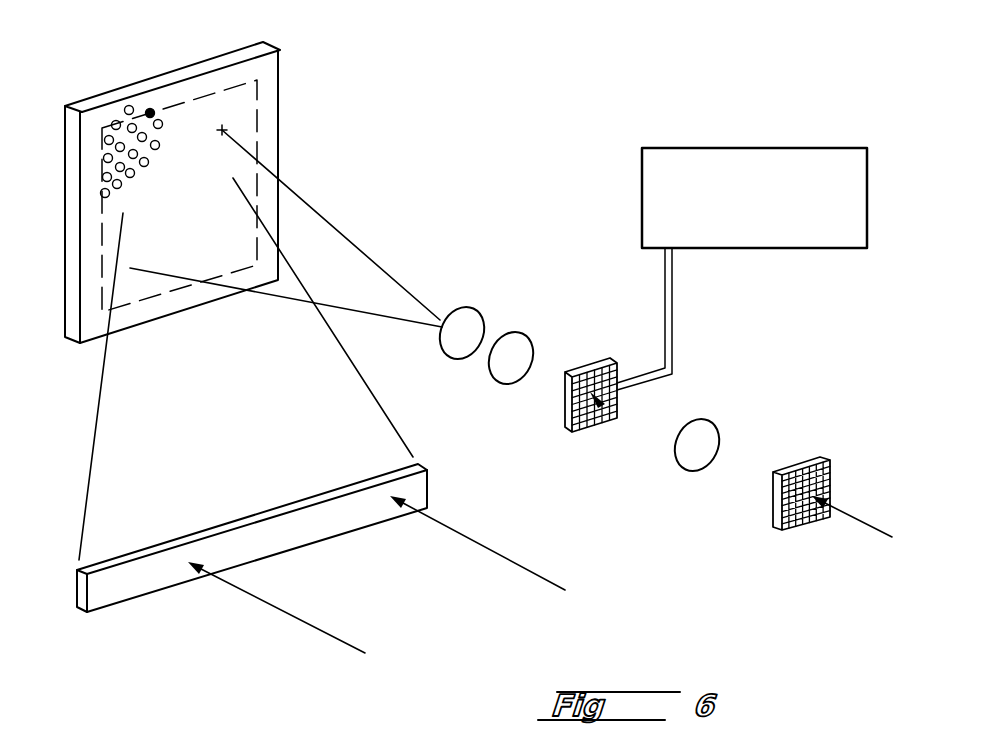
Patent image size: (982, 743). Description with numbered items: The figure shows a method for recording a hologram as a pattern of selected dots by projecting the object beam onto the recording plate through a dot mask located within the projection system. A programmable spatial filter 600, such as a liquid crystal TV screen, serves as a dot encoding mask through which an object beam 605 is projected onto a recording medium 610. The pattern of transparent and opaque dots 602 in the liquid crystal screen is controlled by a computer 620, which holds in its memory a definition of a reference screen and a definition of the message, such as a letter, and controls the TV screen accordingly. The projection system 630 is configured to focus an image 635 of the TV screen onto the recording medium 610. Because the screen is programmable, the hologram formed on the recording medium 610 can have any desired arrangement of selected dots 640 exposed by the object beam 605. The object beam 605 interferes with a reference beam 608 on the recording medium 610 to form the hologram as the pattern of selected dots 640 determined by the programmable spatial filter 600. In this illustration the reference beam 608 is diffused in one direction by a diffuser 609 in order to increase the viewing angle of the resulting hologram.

The recording medium 610 is at (187, 66).
The selected dots 640 is at (162, 120).
The image of the TV screen 635 is at (228, 126).
The object beam 605 is at (383, 313).
The reference beam 608 is at (362, 378).
The projection system 630 is at (510, 410).
The diffuser 609 is at (132, 600).
The computer 620 is at (770, 248).
The programmable spatial filter 600 is at (596, 378).
The transparent and opaque dots 602 is at (607, 423).